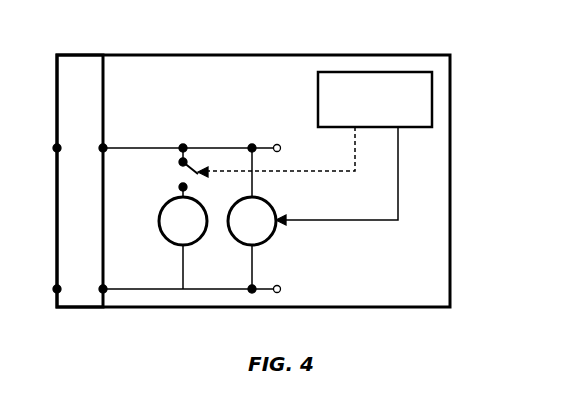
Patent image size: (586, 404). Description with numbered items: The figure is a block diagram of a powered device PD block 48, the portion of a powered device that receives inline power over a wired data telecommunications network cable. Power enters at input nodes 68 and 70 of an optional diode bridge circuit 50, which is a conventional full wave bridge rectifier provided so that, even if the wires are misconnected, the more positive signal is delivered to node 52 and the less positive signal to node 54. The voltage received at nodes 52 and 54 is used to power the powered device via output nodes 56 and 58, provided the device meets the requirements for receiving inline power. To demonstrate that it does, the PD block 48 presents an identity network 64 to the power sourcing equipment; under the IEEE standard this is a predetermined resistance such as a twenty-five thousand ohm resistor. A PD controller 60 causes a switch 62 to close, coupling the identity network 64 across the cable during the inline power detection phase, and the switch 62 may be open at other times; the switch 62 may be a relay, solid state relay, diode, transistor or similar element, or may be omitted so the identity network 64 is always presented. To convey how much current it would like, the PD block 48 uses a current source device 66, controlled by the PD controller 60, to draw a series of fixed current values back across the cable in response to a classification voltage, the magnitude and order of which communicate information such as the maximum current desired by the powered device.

The powered device PD block 48 is at (450, 175).
The diode bridge circuit 50 is at (78, 55).
The node (+) 52 is at (108, 147).
The node (−) 54 is at (107, 289).
The node (+) 56 is at (283, 148).
The node (−) 58 is at (283, 289).
The PD controller 60 is at (318, 90).
The switch 62 is at (176, 171).
The identity network 64 is at (196, 239).
The current source device 66 is at (265, 239).
The input node 68 is at (56, 148).
The input node 70 is at (56, 289).